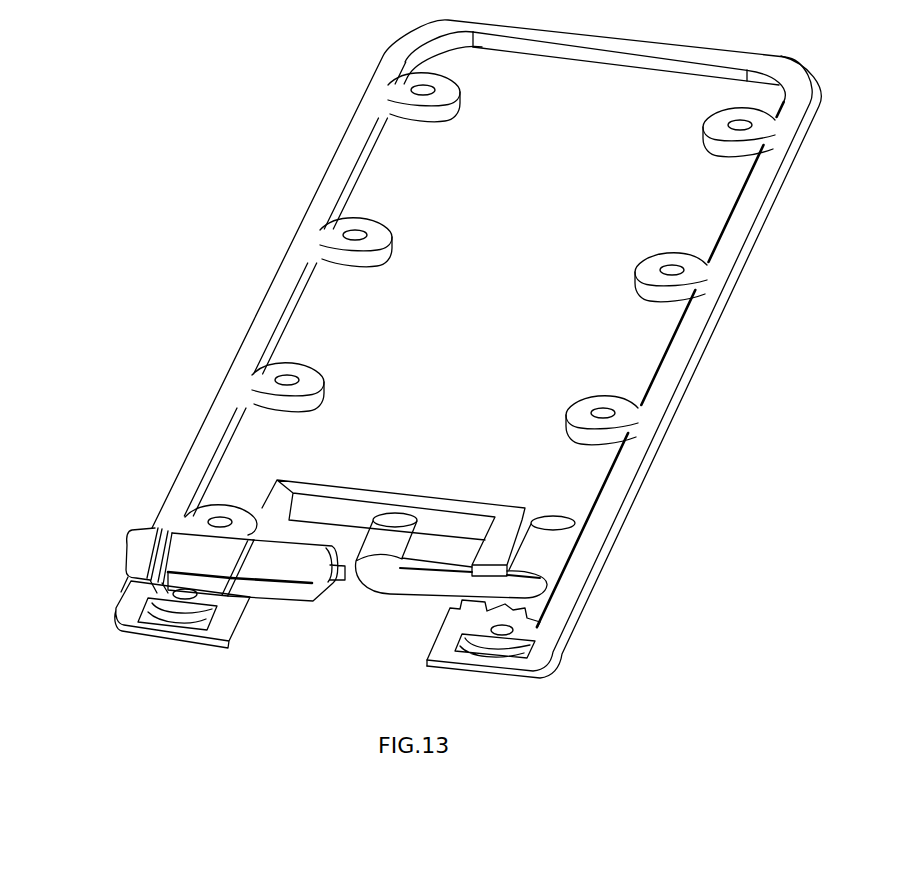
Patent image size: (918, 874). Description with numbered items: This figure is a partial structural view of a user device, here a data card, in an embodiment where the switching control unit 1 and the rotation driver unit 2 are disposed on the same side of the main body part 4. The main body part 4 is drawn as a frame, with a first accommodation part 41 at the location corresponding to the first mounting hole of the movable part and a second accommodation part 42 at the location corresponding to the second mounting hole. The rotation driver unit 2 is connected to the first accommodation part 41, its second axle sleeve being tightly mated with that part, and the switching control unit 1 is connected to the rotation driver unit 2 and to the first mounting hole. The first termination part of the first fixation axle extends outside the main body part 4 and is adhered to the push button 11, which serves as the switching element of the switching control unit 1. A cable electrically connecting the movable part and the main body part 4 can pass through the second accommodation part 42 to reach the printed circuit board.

The main body part 4 is at (408, 358).
The switching control unit 1 is at (288, 567).
The rotation driver unit 2 is at (212, 565).
The push button 11 is at (137, 547).
The first accommodation part 41 is at (207, 592).
The second accommodation part 42 is at (473, 605).